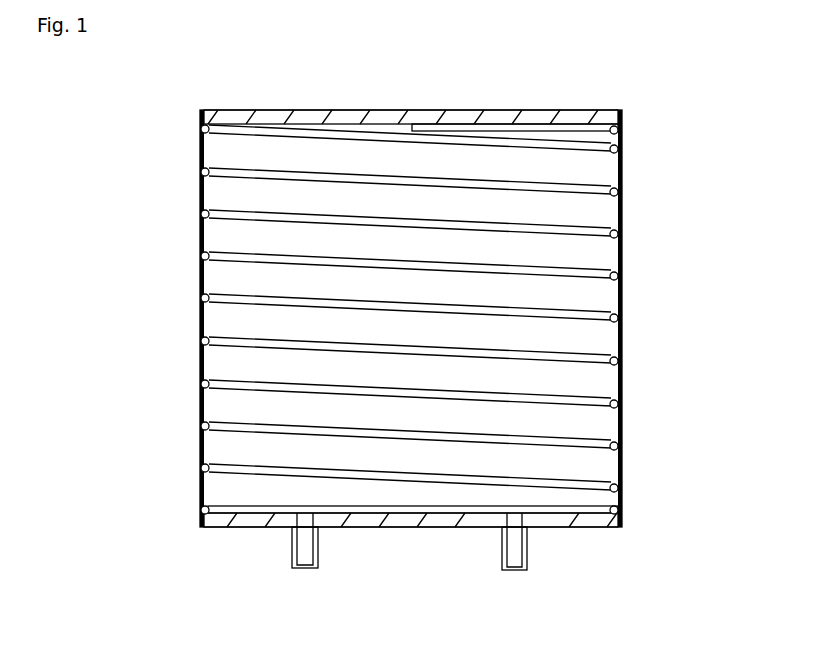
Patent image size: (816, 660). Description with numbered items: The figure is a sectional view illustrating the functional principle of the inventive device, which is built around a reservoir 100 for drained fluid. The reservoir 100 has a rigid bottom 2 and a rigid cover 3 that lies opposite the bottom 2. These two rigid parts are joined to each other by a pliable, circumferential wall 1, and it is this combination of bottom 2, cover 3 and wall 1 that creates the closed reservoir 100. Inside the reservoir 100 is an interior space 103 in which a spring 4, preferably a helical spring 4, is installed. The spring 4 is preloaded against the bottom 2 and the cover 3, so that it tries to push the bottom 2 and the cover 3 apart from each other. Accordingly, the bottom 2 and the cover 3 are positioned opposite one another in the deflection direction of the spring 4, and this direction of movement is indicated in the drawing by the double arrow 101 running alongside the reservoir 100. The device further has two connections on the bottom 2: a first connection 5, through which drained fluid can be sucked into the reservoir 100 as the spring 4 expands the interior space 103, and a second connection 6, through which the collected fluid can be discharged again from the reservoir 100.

The reservoir 100 is at (253, 100).
The direction of movement 101 is at (123, 128).
The interior space 103 is at (393, 200).
The pliable circumferential wall 1 is at (622, 203).
The rigid bottom 2 is at (582, 522).
The rigid cover 3 is at (567, 117).
The spring 4 is at (593, 273).
The first connection 5 is at (513, 555).
The second connection 6 is at (305, 555).